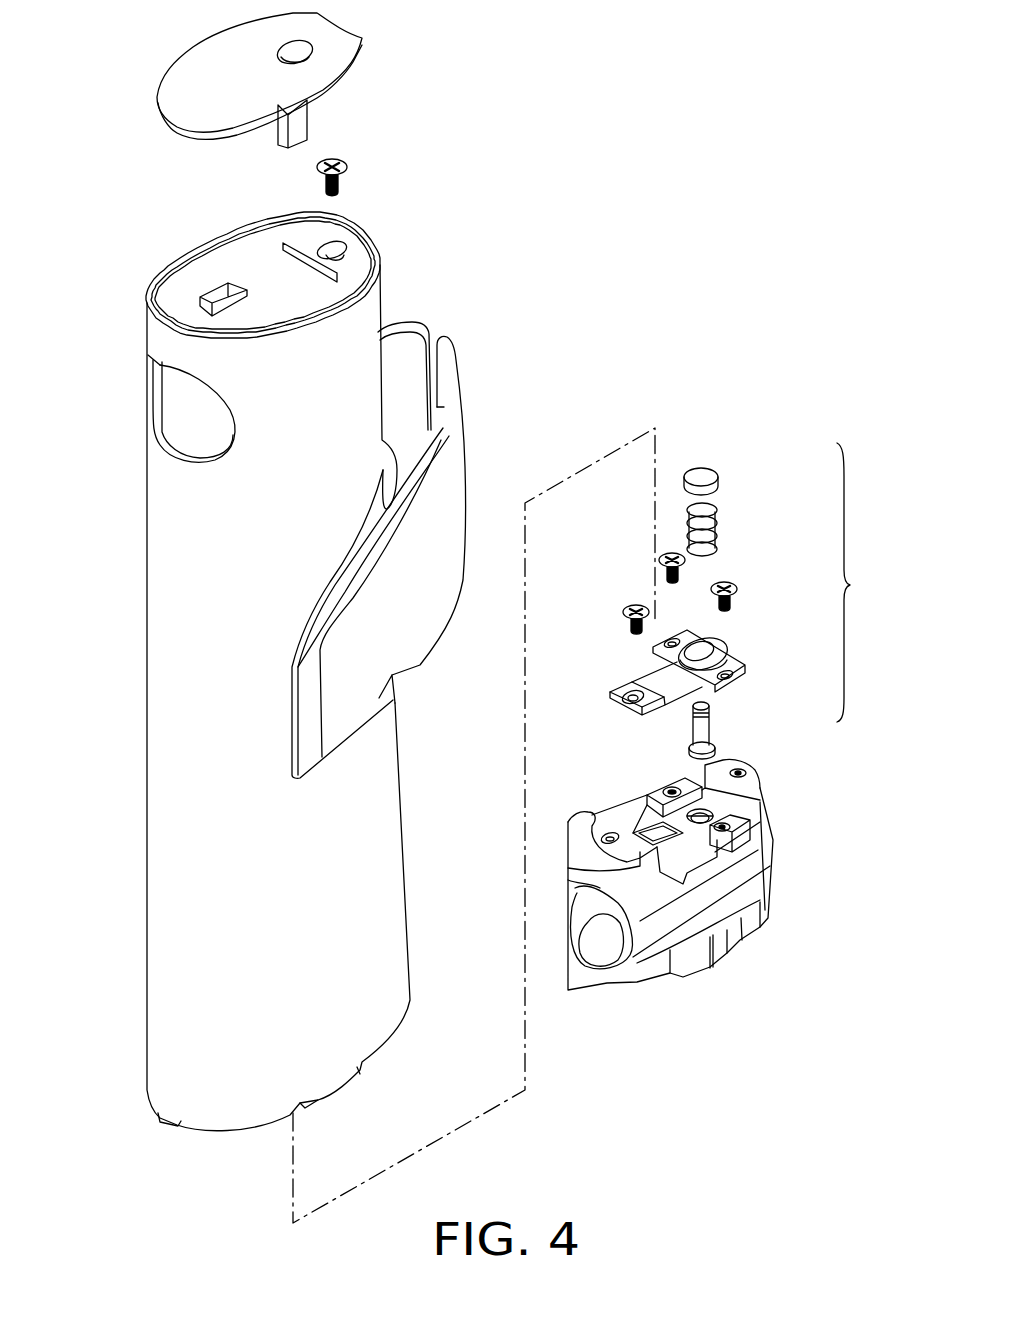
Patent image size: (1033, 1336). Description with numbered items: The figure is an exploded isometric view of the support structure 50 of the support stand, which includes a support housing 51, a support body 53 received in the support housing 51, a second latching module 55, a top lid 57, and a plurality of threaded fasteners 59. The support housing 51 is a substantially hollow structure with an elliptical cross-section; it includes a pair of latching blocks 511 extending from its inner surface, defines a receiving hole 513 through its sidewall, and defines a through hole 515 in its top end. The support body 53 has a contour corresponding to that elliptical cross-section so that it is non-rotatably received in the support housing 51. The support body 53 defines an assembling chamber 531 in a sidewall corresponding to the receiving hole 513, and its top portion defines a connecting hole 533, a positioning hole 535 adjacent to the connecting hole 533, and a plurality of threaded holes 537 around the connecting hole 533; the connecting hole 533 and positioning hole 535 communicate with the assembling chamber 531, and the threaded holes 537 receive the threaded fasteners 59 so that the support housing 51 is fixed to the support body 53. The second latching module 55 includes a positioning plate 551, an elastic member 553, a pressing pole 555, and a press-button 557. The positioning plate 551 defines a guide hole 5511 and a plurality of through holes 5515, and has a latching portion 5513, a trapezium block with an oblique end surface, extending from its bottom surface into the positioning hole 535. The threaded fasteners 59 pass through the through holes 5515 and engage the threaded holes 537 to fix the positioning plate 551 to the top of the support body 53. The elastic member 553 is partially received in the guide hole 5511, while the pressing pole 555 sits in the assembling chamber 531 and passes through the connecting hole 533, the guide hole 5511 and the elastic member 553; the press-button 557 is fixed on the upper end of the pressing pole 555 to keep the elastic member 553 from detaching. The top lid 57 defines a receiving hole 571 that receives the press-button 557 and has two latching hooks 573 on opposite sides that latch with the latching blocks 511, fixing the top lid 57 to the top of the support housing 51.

The support structure 50 is at (603, 124).
The support housing 51 is at (255, 666).
The latching blocks 511 is at (220, 296).
The receiving hole 513 is at (180, 422).
The through hole 515 is at (340, 249).
The support body 53 is at (697, 917).
The assembling chamber 531 is at (605, 942).
The connecting hole 533 is at (702, 816).
The positioning hole 535 is at (655, 836).
The threaded holes 537 is at (747, 818).
The second latching module 55 is at (715, 596).
The positioning plate 551 is at (683, 688).
The guide hole 5511 is at (662, 649).
The latching portion 5513 is at (678, 710).
The through holes 5515 is at (632, 697).
The elastic member 553 is at (714, 512).
The pressing pole 555 is at (705, 731).
The press-button 557 is at (707, 474).
The top lid 57 is at (259, 76).
The receiving hole 571 is at (285, 53).
The latching hooks 573 is at (299, 128).
The threaded fasteners 59 is at (348, 186).